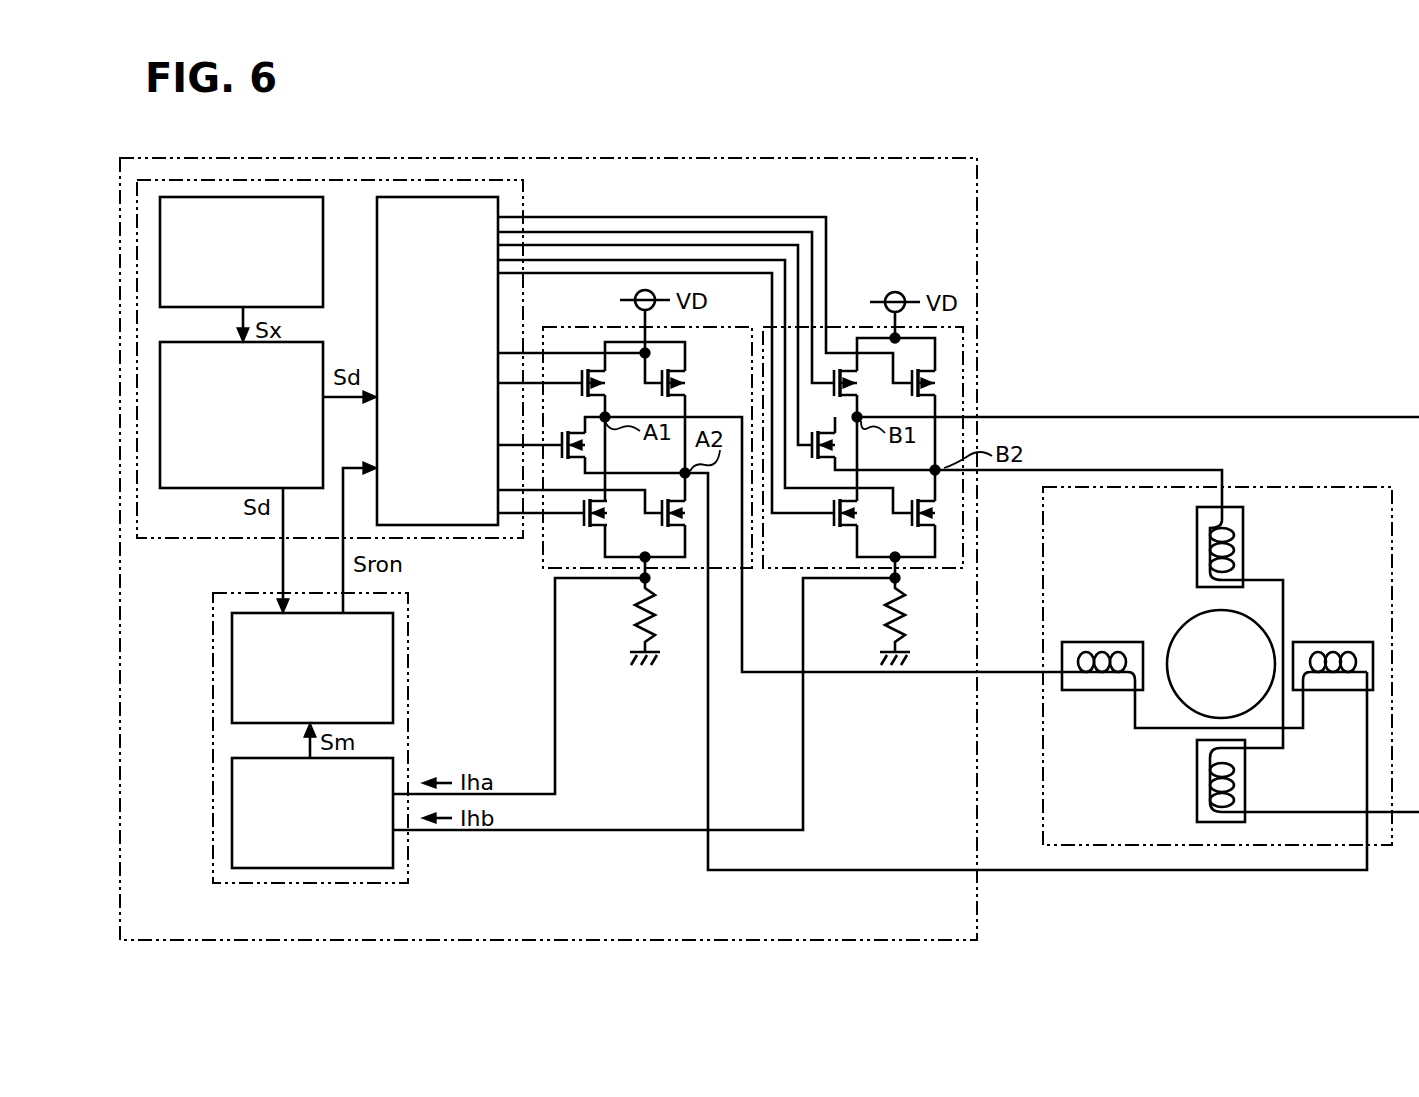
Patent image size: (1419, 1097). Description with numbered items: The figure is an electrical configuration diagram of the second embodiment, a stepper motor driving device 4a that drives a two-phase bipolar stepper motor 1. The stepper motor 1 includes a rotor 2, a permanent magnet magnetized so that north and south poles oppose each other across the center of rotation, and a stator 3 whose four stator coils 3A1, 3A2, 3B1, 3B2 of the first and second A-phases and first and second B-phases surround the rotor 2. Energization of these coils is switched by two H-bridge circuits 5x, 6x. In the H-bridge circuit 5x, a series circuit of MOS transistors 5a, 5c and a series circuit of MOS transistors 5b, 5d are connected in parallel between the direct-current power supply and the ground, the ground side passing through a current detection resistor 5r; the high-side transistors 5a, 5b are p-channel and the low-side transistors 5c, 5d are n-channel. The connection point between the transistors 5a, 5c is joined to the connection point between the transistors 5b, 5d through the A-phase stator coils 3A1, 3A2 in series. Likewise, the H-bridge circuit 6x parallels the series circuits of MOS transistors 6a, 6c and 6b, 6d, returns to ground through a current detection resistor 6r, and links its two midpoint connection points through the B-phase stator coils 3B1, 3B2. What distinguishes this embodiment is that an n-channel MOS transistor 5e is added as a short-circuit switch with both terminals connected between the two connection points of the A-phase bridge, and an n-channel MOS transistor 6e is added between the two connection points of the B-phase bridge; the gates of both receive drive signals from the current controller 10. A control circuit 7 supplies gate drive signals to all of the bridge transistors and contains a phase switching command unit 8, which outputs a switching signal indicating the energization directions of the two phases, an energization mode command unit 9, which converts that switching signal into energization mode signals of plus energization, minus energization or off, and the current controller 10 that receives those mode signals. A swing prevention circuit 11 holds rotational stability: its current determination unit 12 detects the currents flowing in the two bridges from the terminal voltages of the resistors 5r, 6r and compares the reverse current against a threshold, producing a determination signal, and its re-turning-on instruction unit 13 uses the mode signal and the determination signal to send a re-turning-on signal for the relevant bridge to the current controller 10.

The stepper motor 1 is at (1288, 485).
The rotor 2 is at (1183, 626).
The stator 3 is at (1203, 627).
The stator coil 3A1 is at (1088, 642).
The stator coil 3A2 is at (1331, 642).
The stator coil 3B1 is at (1197, 537).
The stator coil 3B2 is at (1197, 788).
The stepper motor driving device 4a is at (840, 148).
The MOS transistor 5a is at (584, 369).
The MOS transistor 5b is at (682, 386).
The MOS transistor 5c is at (601, 530).
The MOS transistor 5d is at (679, 535).
The MOS transistor 5e is at (592, 450).
The current detection resistor 5r is at (643, 626).
The H-bridge circuit 5x is at (580, 580).
The MOS transistor 6a is at (841, 369).
The MOS transistor 6b is at (942, 383).
The MOS transistor 6c is at (849, 530).
The MOS transistor 6d is at (944, 513).
The MOS transistor 6e is at (843, 452).
The current detection resistor 6r is at (888, 614).
The H-bridge circuit 6x is at (932, 570).
The control circuit 7 is at (443, 181).
The phase switching command unit 8 is at (248, 197).
The energization mode command unit 9 is at (172, 488).
The current controller 10 is at (465, 525).
The swing prevention circuit 11 is at (418, 858).
The current determination unit 12 is at (232, 819).
The re-turning-on instruction unit 13 is at (232, 675).